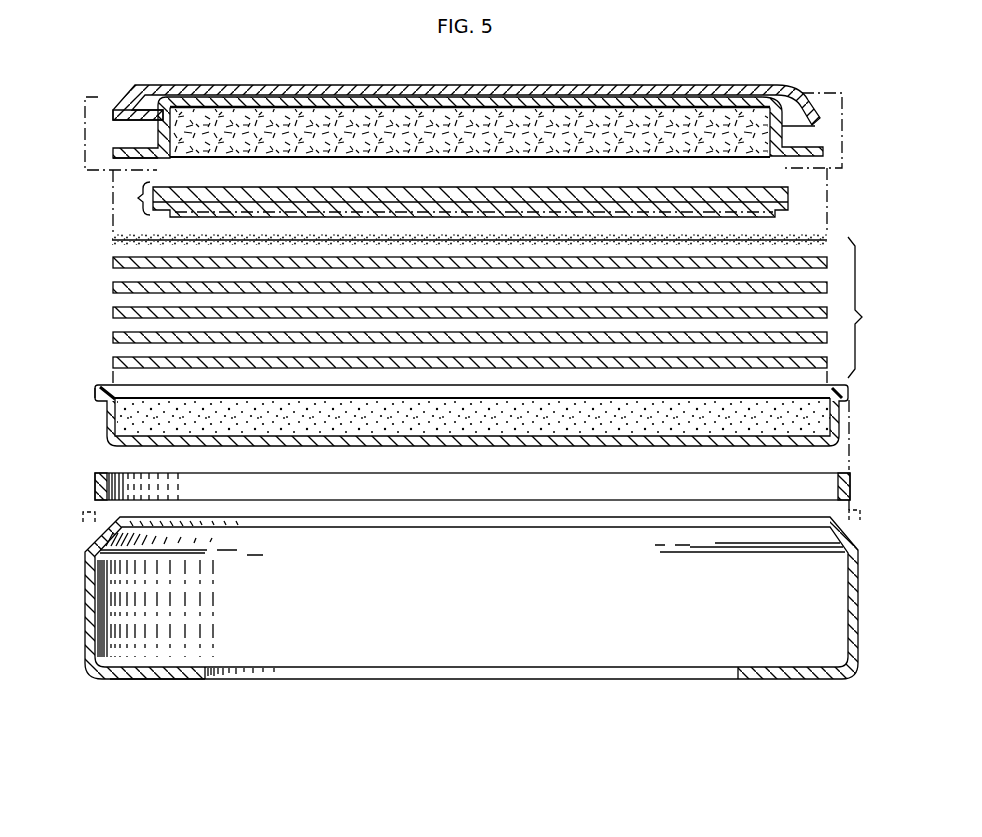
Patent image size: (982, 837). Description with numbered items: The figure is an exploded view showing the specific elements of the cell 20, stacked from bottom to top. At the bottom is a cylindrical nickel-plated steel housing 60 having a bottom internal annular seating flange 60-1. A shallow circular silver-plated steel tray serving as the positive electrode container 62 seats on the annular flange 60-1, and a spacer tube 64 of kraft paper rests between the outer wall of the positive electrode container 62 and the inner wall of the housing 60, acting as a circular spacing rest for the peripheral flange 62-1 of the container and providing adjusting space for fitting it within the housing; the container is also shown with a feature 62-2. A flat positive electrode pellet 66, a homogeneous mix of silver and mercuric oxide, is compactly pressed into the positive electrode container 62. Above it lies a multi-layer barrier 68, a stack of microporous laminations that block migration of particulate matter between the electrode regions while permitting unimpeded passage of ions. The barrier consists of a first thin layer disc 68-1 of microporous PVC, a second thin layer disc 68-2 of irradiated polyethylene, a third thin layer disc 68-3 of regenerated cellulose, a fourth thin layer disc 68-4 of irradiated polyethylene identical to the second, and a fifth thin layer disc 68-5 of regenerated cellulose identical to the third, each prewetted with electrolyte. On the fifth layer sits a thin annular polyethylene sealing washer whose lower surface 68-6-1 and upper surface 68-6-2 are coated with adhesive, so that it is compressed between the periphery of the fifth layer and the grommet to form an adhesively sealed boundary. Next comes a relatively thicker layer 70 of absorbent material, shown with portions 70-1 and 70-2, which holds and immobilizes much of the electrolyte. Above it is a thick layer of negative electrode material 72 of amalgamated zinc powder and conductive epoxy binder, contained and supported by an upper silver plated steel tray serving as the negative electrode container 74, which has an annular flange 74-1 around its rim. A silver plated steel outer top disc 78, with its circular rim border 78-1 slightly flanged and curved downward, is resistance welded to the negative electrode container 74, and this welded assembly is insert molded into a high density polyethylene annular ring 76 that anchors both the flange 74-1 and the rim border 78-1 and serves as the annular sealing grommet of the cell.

The cell 20 is at (302, 76).
The outer top disc 78 is at (190, 80).
The circular rim border 78-1 is at (116, 113).
The negative electrode container 74 is at (176, 137).
The annular flange 74-1 is at (118, 164).
The negative electrode material 72 is at (527, 137).
The polyethylene annular ring 76 is at (85, 136).
The layer of absorbent material 70 is at (137, 197).
The plate upper layer 70-1 is at (263, 188).
The plate lower layer 70-2 is at (348, 221).
The multi-layer barrier 68 is at (862, 317).
The upper surface 68-6-2 is at (128, 233).
The lower surface 68-6-1 is at (112, 242).
The fifth thin layer disc 68-5 is at (113, 262).
The fourth thin layer disc 68-4 is at (113, 287).
The third thin layer disc 68-3 is at (113, 312).
The second thin layer disc 68-2 is at (113, 337).
The first thin layer disc 68-1 is at (113, 362).
The positive electrode container 62 is at (103, 410).
The peripheral flange 62-1 is at (96, 391).
The tray seam 62-2 is at (116, 525).
The positive electrode pellet 66 is at (443, 421).
The spacer tube 64 is at (106, 490).
The housing 60 is at (78, 583).
The bottom internal annular seating flange 60-1 is at (153, 681).